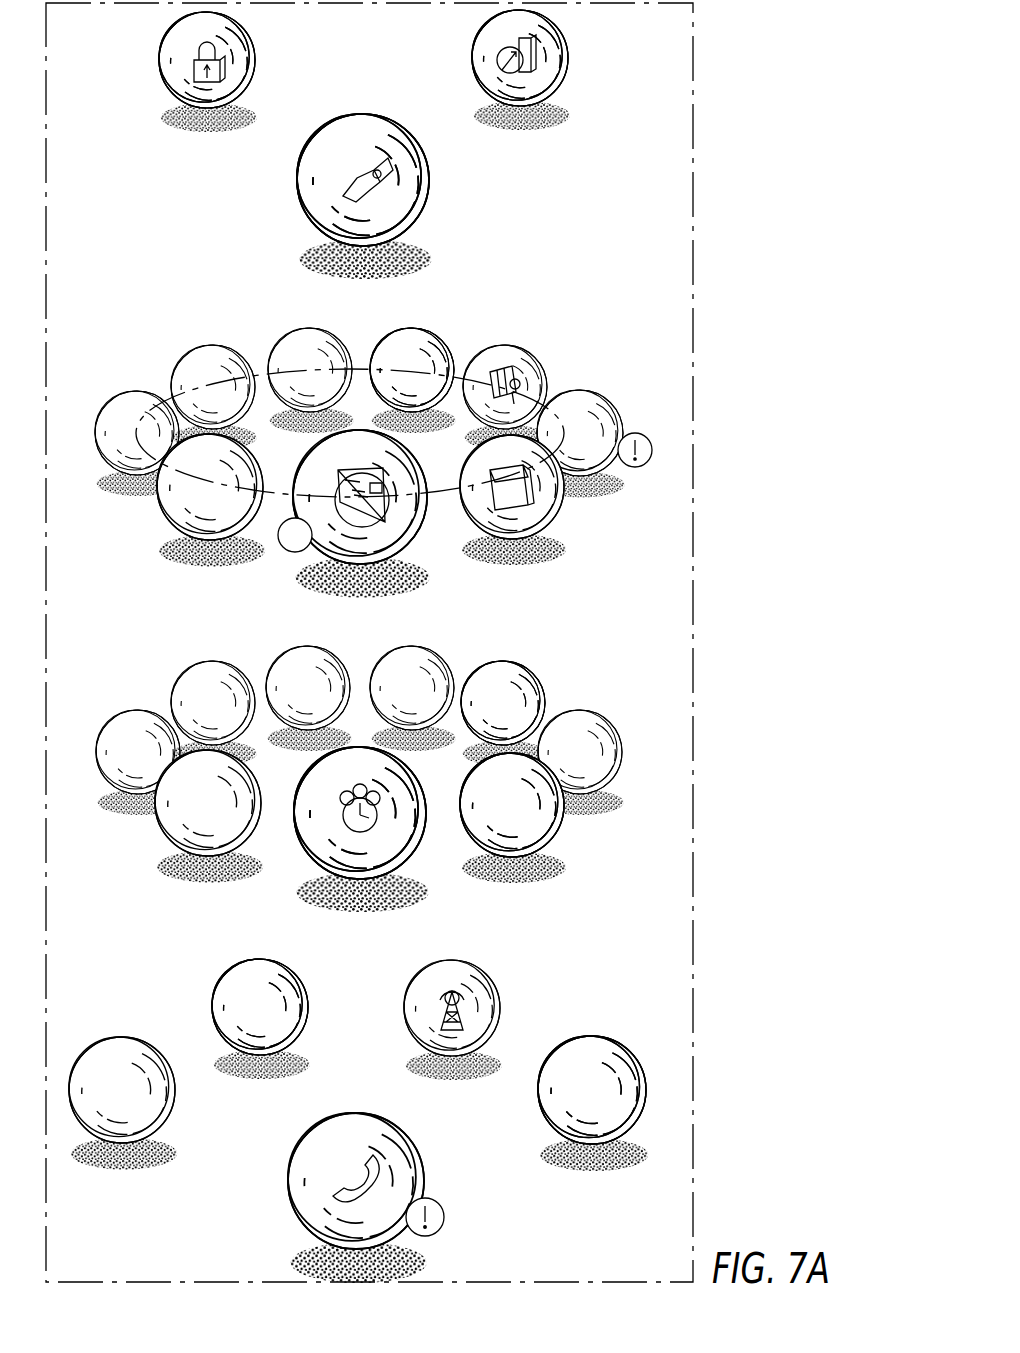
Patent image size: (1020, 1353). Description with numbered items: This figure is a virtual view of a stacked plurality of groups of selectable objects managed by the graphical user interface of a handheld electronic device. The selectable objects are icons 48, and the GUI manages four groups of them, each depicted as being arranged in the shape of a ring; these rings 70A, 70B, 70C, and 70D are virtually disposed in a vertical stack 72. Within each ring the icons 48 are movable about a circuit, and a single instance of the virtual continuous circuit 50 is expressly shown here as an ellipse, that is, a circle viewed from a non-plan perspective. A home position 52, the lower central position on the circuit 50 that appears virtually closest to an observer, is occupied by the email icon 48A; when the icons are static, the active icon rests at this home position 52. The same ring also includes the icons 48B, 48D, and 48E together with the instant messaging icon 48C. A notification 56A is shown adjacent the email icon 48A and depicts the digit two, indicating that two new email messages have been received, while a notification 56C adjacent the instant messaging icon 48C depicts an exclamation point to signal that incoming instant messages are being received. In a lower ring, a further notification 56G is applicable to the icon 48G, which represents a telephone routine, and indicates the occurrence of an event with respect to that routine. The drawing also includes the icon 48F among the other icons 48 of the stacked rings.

The icon 48 is at (257, 60).
The email icon 48A is at (440, 465).
The icon 48B is at (563, 517).
The instant messaging icon 48C is at (577, 390).
The icon 48D is at (507, 342).
The icon 48E is at (292, 335).
The wireless network icon 48F is at (477, 962).
The icon 48G is at (413, 1138).
The virtual continuous circuit 50 is at (278, 493).
The home position 52 is at (418, 538).
The notification 56A is at (280, 547).
The notification 56C is at (637, 437).
The notification 56G is at (445, 1203).
The ring 70A is at (580, 68).
The ring 70B is at (386, 421).
The ring 70C is at (478, 652).
The ring 70D is at (358, 1103).
The stack 72 is at (705, 212).